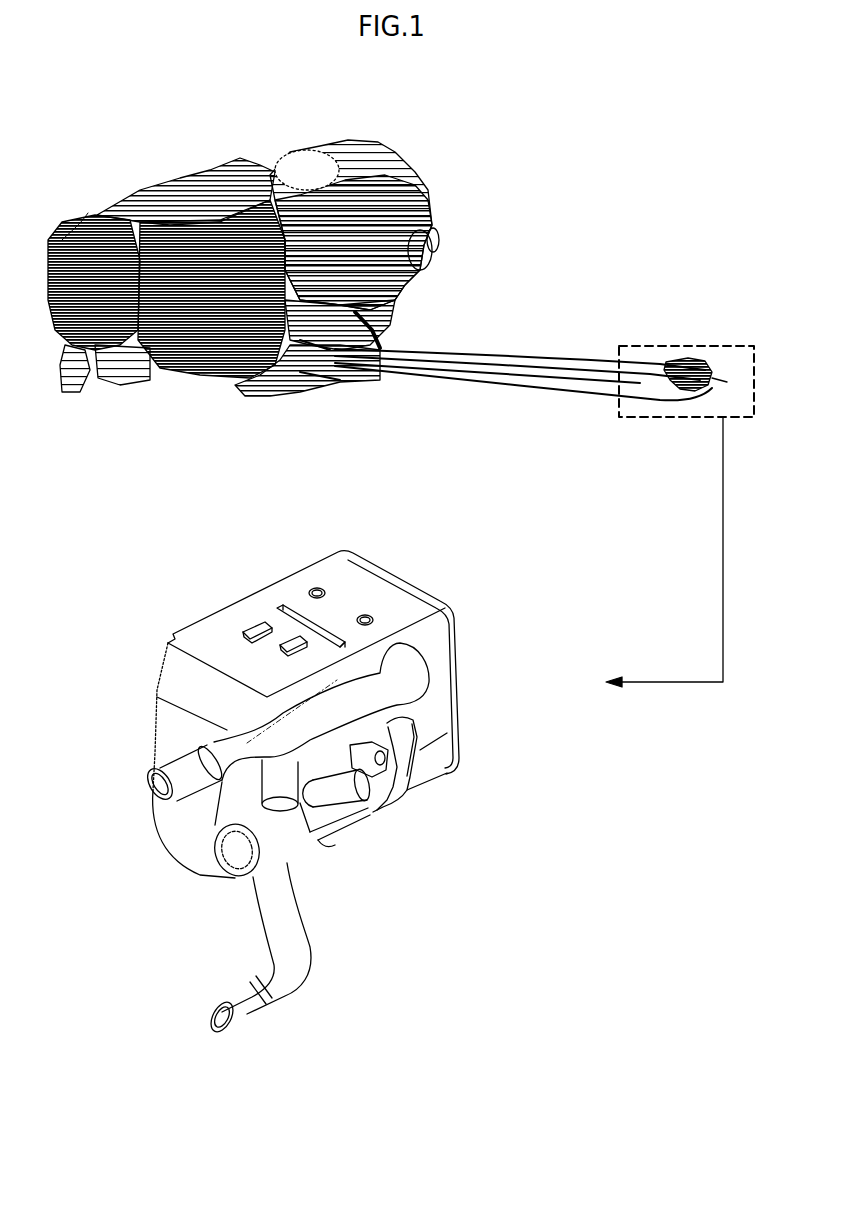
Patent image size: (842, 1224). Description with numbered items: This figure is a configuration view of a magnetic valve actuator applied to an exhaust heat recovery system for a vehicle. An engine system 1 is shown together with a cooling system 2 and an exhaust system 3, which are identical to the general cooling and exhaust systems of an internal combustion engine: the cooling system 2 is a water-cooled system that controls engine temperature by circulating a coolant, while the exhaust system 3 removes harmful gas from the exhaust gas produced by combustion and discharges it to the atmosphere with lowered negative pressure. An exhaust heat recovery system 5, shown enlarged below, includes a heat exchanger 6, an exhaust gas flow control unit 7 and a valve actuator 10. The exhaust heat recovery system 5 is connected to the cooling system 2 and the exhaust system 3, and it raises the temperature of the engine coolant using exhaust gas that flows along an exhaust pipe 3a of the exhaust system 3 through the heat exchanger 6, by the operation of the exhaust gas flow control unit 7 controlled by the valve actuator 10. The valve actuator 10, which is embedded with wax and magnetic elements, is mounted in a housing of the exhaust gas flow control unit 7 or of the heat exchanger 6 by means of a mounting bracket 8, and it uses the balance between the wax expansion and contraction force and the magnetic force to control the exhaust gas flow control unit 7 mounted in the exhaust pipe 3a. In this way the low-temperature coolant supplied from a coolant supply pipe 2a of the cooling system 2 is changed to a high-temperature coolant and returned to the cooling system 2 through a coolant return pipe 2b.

The engine system 1 is at (190, 190).
The cooling system 2 is at (88, 213).
The exhaust system 3 is at (362, 325).
The coolant supply pipe 2a is at (190, 770).
The coolant return pipe 2b is at (280, 925).
The exhaust pipe 3a is at (192, 818).
The exhaust heat recovery system 5 is at (692, 358).
The heat exchanger 6 is at (433, 587).
The exhaust gas flow control unit 7 is at (413, 727).
The mounting bracket 8 is at (300, 803).
The valve actuator 10 is at (320, 817).